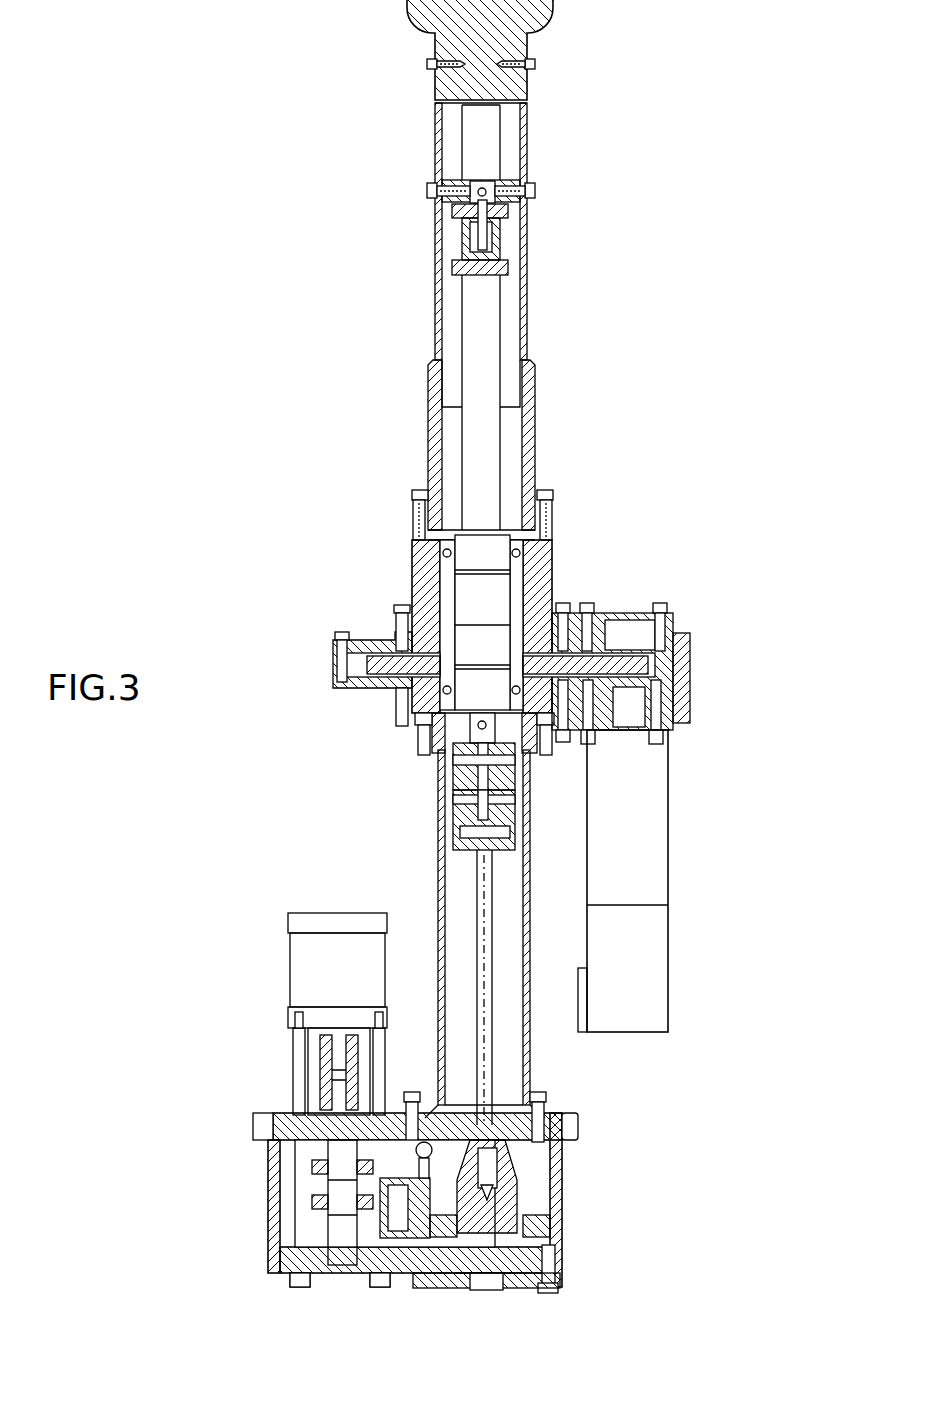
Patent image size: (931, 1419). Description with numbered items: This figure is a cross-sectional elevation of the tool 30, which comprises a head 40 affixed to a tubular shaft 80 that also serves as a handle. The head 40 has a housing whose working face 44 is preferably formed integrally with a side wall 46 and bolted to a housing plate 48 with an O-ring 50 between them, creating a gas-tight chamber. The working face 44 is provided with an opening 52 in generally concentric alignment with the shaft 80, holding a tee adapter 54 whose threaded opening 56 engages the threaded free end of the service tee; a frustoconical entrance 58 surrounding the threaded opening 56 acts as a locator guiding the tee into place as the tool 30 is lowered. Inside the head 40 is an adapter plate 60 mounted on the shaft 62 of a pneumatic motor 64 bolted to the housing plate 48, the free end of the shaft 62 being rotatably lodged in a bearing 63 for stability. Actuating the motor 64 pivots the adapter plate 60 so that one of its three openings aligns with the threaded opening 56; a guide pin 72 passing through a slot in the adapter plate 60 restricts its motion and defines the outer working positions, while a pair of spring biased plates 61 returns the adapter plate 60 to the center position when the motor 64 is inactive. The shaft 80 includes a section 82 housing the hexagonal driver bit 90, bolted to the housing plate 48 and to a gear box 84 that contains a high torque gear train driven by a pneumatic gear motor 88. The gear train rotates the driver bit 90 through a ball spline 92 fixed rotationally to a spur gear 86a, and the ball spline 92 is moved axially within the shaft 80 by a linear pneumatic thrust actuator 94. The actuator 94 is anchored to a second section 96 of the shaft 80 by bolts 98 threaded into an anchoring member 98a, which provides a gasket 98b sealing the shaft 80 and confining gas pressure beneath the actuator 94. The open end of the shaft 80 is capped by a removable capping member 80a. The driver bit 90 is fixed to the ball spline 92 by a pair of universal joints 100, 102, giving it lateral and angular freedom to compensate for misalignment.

The tool 30 is at (290, 790).
The head 40 is at (262, 1050).
The working face 44 is at (380, 1275).
The side wall 46 is at (562, 1185).
The housing plate 48 is at (300, 1115).
The O-ring 50 is at (565, 1135).
The opening 52 is at (557, 1262).
The tee adapter 54 is at (520, 1287).
The threaded opening 56 is at (476, 1292).
The frustoconical entrance 58 is at (485, 1291).
The adapter plate 60 is at (540, 1225).
The spring biased plates 61 is at (312, 1168).
The shaft 62 is at (332, 1186).
The bearing 63 is at (305, 1270).
The pneumatic motor 64 is at (295, 960).
The guide pin 72 is at (390, 1225).
The tubular shaft 80 is at (420, 418).
The capping member 80a is at (538, 15).
The section 82 is at (438, 920).
The gear box 84 is at (392, 700).
The spur gear 86a is at (556, 735).
The pneumatic gear motor 88 is at (605, 865).
The driver bit 90 is at (480, 980).
The ball spline 92 is at (460, 600).
The linear pneumatic thrust actuator 94 is at (468, 130).
The second section 96 is at (528, 332).
The bolts 98 is at (528, 188).
The anchoring member 98a is at (443, 183).
The gasket 98b is at (448, 208).
The universal joint 100 is at (456, 770).
The universal joint 102 is at (455, 818).